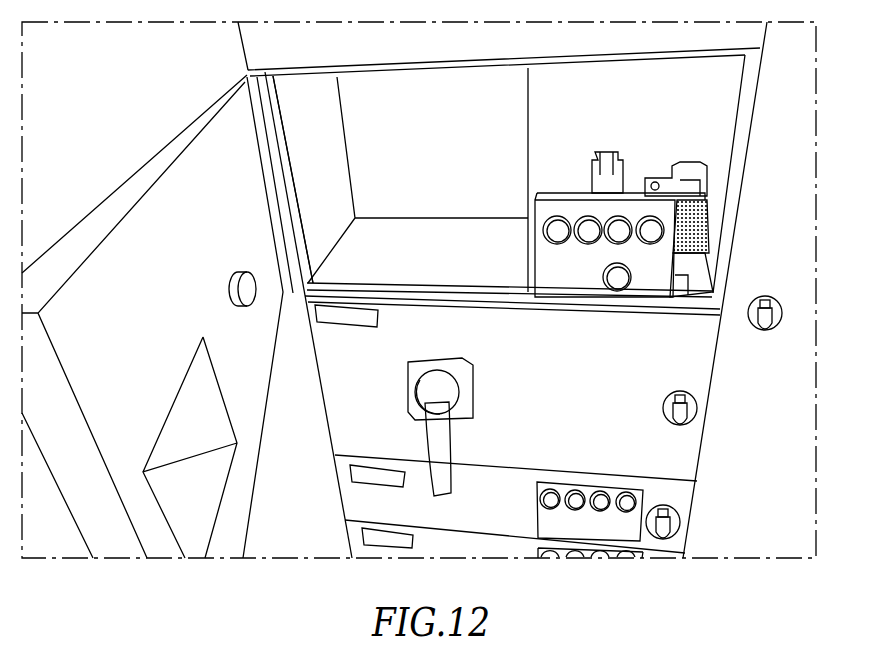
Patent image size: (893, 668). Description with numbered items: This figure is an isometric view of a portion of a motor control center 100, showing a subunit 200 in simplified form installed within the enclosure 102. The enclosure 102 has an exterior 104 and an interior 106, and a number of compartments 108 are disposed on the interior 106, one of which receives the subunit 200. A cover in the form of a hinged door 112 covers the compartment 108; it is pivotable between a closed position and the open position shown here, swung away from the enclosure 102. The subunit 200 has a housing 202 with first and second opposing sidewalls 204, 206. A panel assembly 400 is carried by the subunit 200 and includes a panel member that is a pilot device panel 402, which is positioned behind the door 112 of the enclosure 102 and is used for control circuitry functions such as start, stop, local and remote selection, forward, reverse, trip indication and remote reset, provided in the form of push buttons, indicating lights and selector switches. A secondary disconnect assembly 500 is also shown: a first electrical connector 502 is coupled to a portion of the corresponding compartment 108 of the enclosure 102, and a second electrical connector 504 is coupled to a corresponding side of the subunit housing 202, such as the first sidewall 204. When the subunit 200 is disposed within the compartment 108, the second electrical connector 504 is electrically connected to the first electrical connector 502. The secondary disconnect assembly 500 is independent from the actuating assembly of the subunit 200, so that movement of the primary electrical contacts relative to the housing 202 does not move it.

The motor control center 100 is at (724, 597).
The enclosure 102 is at (255, 38).
The exterior 104 is at (735, 523).
The interior 106 is at (707, 105).
The compartment 108 is at (413, 85).
The hinged door 112 is at (160, 306).
The subunit 200 is at (510, 297).
The housing 202 is at (287, 207).
The first sidewall 204 is at (676, 302).
The second sidewall 206 is at (293, 125).
The panel assembly 400 is at (607, 317).
The pilot device panel 402 is at (537, 250).
The secondary disconnect assembly 500 is at (713, 200).
The first electrical connector 502 is at (710, 173).
The second electrical connector 504 is at (707, 227).